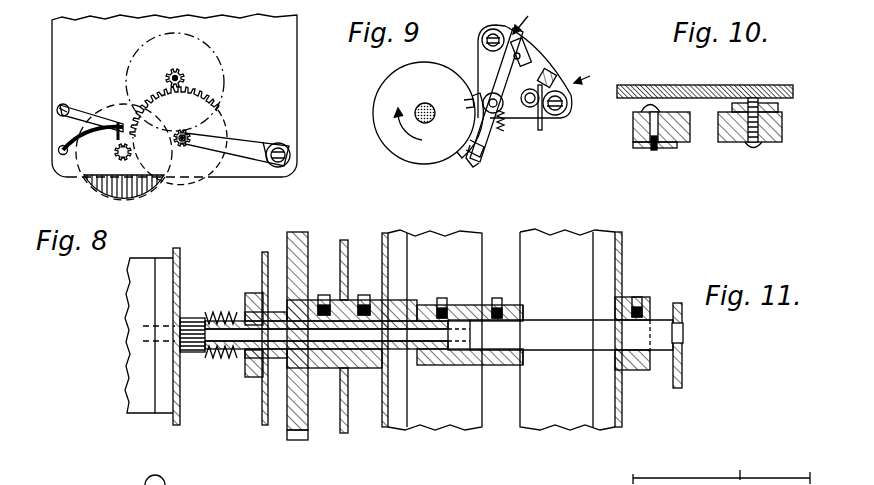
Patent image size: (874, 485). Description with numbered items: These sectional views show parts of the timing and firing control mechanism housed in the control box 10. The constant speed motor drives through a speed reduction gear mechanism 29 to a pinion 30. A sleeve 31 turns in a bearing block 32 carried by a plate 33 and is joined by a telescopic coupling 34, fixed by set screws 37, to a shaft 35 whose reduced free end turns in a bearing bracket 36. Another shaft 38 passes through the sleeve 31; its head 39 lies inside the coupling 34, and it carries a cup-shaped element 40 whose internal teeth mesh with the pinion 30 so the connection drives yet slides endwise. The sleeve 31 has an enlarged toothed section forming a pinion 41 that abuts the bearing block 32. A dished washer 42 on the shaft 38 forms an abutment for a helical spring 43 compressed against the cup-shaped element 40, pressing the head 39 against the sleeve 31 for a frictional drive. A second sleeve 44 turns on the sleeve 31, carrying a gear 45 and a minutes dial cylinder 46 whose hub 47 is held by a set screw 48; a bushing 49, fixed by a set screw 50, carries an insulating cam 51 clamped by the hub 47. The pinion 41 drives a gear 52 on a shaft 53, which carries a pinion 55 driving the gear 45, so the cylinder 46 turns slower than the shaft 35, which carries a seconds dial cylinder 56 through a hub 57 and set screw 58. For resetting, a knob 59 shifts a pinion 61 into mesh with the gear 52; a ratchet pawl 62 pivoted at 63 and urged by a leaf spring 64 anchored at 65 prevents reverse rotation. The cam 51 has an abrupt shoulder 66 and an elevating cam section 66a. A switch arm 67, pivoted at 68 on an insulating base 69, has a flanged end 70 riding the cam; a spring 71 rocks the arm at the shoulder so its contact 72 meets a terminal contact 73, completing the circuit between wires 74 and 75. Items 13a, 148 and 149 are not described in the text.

In FIG. 9, the control box 10 is at (560, 45).
In FIG. 11, the dimension reference 13a is at (721, 467).
In FIG. 11, the speed reduction gear mechanism 29 is at (138, 313).
In FIG. 11, the pinion 30 is at (187, 353).
In FIG. 8, the sleeve 31 is at (178, 76).
In FIG. 11, the sleeve 31 is at (447, 292).
In FIG. 11, the bearing block 32 is at (252, 377).
In FIG. 8, the plate 33 is at (174, 95).
In FIG. 11, the plate 33 is at (180, 263).
In FIG. 11, the telescopic coupling 34 is at (515, 313).
In FIG. 11, the shaft 35 is at (555, 335).
In FIG. 11, the bearing bracket 36 is at (685, 363).
In FIG. 11, the set screws 37 is at (510, 280).
In FIG. 8, the shaft 38 is at (197, 76).
In FIG. 9, the shaft 38 is at (419, 104).
In FIG. 11, the shaft 38 is at (437, 333).
In FIG. 11, the head 39 is at (462, 336).
In FIG. 11, the cup-shaped element 40 is at (193, 317).
In FIG. 8, the pinion 41 is at (171, 77).
In FIG. 11, the pinion 41 is at (265, 420).
In FIG. 11, the dished washer 42 is at (232, 360).
In FIG. 11, the helical spring 43 is at (227, 317).
In FIG. 9, the sleeve 44 is at (420, 140).
In FIG. 11, the sleeve 44 is at (397, 310).
In FIG. 8, the gear 45 is at (222, 103).
In FIG. 11, the gear 45 is at (293, 433).
In FIG. 11, the minutes dial cylinder 46 is at (400, 243).
In FIG. 11, the hub 47 is at (373, 373).
In FIG. 11, the set screw 48 is at (363, 297).
In FIG. 11, the bushing 49 is at (325, 368).
In FIG. 11, the set screw 50 is at (323, 297).
In FIG. 9, the cam 51 is at (376, 97).
In FIG. 11, the cam 51 is at (346, 433).
In FIG. 8, the gear 52 is at (228, 125).
In FIG. 8, the shaft 53 is at (185, 143).
In FIG. 8, the pinion 55 is at (182, 143).
In FIG. 11, the seconds dial cylinder 56 is at (605, 253).
In FIG. 11, the hub 57 is at (638, 368).
In FIG. 11, the set screw 58 is at (637, 298).
In FIG. 8, the resetting knob 59 is at (133, 192).
In FIG. 8, the pinion 61 is at (120, 155).
In FIG. 8, the ratchet pawl 62 is at (118, 122).
In FIG. 8, the pivot 63 is at (65, 108).
In FIG. 8, the leaf spring 64 is at (62, 152).
In FIG. 8, the anchor 65 is at (60, 148).
In FIG. 9, the abrupt shoulder 66 is at (460, 125).
In FIG. 9, the elevating cam section 66a is at (462, 75).
In FIG. 9, the switch arm 67 is at (478, 163).
In FIG. 10, the switch arm 67 is at (643, 145).
In FIG. 9, the pivot 68 is at (482, 97).
In FIG. 9, the base 69 is at (502, 8).
In FIG. 10, the base 69 is at (745, 68).
In FIG. 9, the flanged end 70 is at (473, 150).
In FIG. 9, the spring 71 is at (534, 91).
In FIG. 9, the contact 72 is at (519, 52).
In FIG. 10, the contact 72 is at (680, 133).
In FIG. 9, the terminal contact 73 is at (552, 73).
In FIG. 10, the terminal contact 73 is at (768, 135).
In FIG. 9, the wire 74 is at (541, 127).
In FIG. 9, the wire 75 is at (500, 135).
In FIG. 11, the reference (adjacent figure) 148 is at (131, 475).
In FIG. 11, the reference (adjacent figure) 149 is at (535, 482).